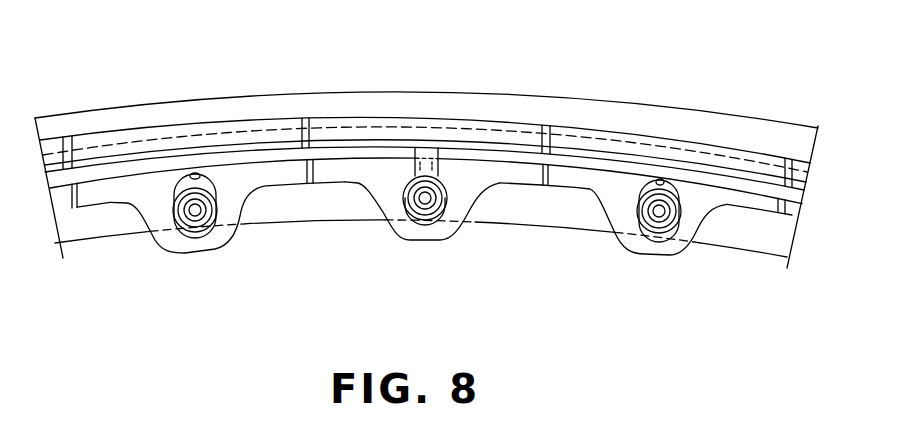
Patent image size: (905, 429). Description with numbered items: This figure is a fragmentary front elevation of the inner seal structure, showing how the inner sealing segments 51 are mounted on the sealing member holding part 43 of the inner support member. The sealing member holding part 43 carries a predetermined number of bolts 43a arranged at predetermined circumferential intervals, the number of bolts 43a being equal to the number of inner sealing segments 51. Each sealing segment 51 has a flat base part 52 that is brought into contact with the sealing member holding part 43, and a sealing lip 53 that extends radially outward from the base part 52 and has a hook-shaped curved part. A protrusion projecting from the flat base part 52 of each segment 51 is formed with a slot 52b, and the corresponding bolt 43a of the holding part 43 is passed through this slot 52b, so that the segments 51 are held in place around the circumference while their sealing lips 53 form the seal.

The sealing lip 53 is at (113, 113).
The slot 52b is at (193, 172).
The flat base part 52 is at (224, 249).
The inner sealing segment 51 is at (212, 264).
The sealing member holding part 43 is at (93, 246).
The bolt 43a is at (195, 210).